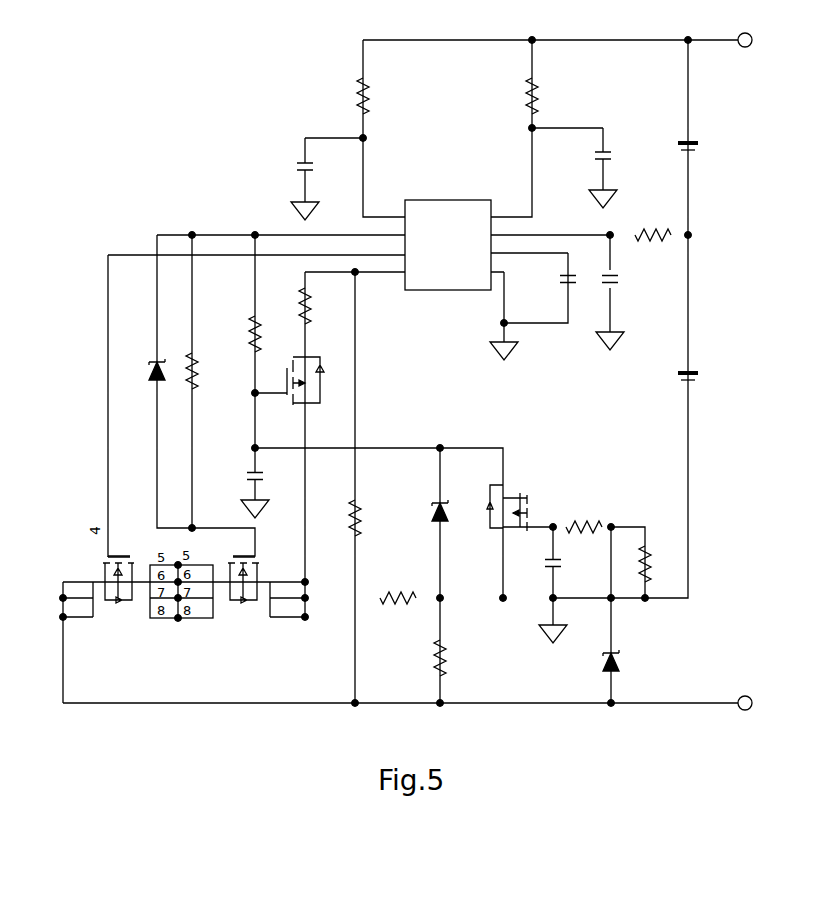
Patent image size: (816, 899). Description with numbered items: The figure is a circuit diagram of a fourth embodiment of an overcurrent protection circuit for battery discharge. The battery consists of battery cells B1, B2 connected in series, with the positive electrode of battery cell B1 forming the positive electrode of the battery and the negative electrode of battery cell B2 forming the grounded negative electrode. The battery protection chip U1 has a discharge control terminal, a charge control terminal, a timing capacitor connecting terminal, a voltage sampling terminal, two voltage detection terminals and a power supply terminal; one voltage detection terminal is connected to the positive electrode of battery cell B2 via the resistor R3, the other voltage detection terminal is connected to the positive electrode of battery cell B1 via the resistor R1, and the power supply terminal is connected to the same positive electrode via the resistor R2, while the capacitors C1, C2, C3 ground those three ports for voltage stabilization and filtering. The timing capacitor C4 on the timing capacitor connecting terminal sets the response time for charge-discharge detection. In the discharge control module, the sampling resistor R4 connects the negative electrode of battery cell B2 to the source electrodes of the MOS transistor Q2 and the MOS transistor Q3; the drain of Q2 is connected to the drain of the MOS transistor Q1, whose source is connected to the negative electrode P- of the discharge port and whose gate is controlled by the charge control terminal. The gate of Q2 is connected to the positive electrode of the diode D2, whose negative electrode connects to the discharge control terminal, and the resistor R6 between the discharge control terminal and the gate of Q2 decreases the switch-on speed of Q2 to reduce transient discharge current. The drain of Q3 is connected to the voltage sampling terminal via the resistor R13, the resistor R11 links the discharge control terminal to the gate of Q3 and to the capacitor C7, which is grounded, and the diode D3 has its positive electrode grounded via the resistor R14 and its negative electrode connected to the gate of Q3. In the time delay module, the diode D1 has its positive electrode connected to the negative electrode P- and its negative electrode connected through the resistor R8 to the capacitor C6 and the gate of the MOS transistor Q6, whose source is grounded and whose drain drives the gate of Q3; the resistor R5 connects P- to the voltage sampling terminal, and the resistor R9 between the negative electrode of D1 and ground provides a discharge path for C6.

The resistor R1 is at (378, 96).
The resistor R2 is at (547, 96).
The resistor R3 is at (653, 220).
The sampling resistor R4 is at (398, 587).
The resistor R5 is at (370, 518).
The resistor R6 is at (203, 371).
The resistor R8 is at (584, 514).
The resistor R9 is at (656, 564).
The resistor R11 is at (271, 332).
The resistor R13 is at (323, 306).
The resistor R14 is at (459, 658).
The capacitor C1 is at (318, 166).
The capacitor C2 is at (614, 154).
The capacitor C3 is at (624, 279).
The timing capacitor C4 is at (579, 279).
The capacitor C6 is at (564, 563).
The capacitor C7 is at (243, 476).
The battery cell B1 is at (698, 148).
The battery cell B2 is at (697, 378).
The diode D1 is at (617, 639).
The diode D2 is at (141, 373).
The diode D3 is at (451, 511).
The MOS transistor Q1 is at (90, 598).
The MOS transistor Q2 is at (264, 598).
The MOS transistor Q3 is at (303, 384).
The MOS transistor Q6 is at (514, 514).
The battery protection chip U1 is at (446, 272).
The negative electrode of the discharge port P- is at (748, 696).